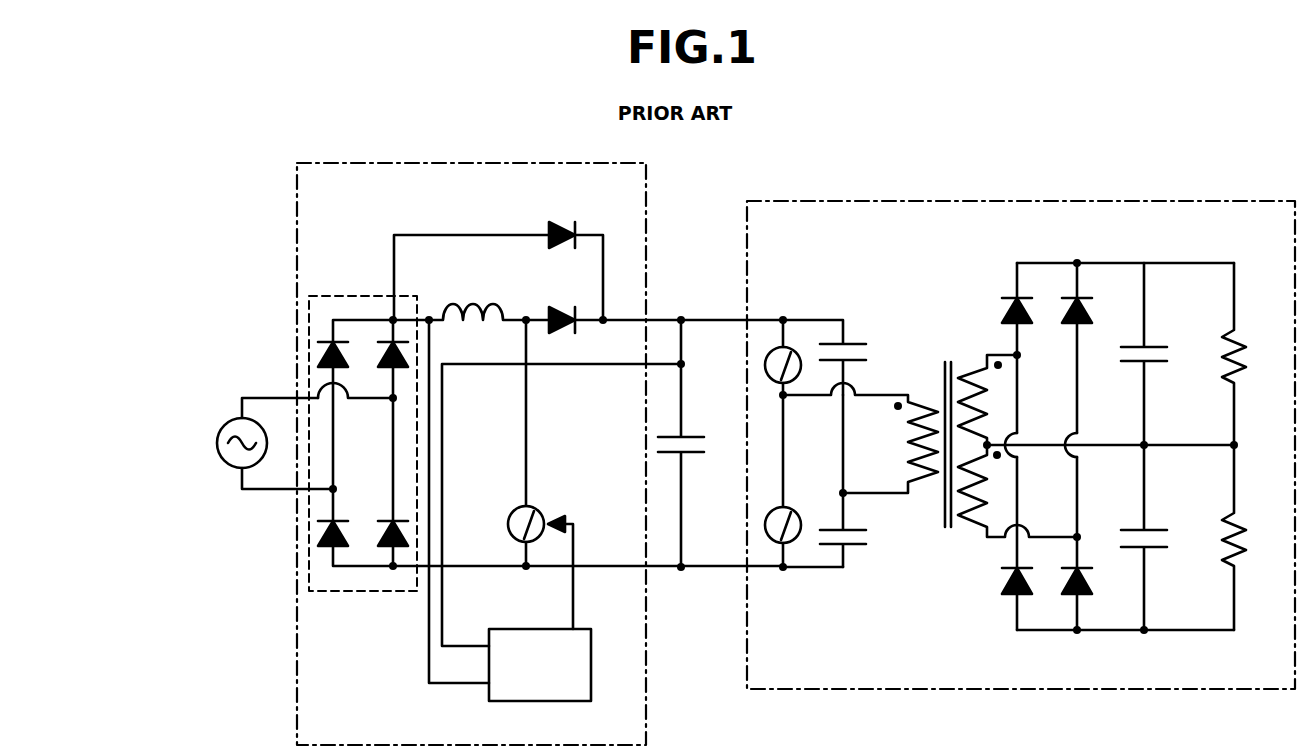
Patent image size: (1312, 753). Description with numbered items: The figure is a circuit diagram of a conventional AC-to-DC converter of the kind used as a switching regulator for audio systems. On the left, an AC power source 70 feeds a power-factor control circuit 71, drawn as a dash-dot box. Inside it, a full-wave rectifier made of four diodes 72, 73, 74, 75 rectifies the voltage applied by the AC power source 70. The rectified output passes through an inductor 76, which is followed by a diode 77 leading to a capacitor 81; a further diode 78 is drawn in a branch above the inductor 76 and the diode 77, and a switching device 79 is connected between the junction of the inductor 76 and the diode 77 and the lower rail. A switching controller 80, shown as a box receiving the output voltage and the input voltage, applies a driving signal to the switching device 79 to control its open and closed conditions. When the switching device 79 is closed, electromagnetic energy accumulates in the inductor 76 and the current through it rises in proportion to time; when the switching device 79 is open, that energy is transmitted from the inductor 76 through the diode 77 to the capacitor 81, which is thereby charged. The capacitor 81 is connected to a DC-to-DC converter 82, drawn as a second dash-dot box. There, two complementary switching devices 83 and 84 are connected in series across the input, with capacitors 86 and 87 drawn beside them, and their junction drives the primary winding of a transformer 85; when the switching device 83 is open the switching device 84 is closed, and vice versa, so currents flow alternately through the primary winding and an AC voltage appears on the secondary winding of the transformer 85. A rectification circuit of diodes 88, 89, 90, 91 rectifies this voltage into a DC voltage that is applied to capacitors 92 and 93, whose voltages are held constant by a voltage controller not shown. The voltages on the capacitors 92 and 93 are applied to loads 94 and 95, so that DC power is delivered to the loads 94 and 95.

The AC power source 70 is at (220, 428).
The power-factor control circuit 71 is at (646, 200).
The diode 72 is at (322, 356).
The diode 73 is at (405, 351).
The diode 74 is at (322, 538).
The diode 75 is at (406, 528).
The inductor 76 is at (470, 302).
The diode 77 is at (565, 335).
The diode 78 is at (548, 230).
The switching device 79 is at (538, 508).
The switching controller 80 is at (577, 628).
The capacitor 81 is at (684, 436).
The DC-to-DC converter 82 is at (1205, 201).
The switching device 83 is at (780, 386).
The switching device 84 is at (783, 514).
The transformer 85 is at (930, 434).
The capacitor 86 is at (848, 345).
The capacitor 87 is at (850, 546).
The diode 88 is at (1002, 312).
The diode 89 is at (1090, 313).
The diode 90 is at (1007, 597).
The diode 91 is at (1080, 597).
The capacitor 92 is at (1150, 346).
The capacitor 93 is at (1150, 530).
The load 94 is at (1240, 340).
The load 95 is at (1240, 522).